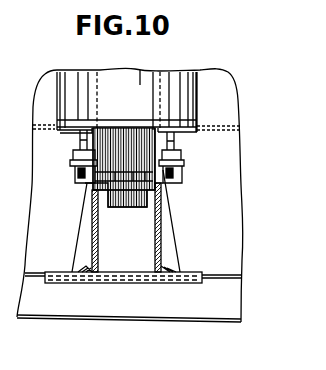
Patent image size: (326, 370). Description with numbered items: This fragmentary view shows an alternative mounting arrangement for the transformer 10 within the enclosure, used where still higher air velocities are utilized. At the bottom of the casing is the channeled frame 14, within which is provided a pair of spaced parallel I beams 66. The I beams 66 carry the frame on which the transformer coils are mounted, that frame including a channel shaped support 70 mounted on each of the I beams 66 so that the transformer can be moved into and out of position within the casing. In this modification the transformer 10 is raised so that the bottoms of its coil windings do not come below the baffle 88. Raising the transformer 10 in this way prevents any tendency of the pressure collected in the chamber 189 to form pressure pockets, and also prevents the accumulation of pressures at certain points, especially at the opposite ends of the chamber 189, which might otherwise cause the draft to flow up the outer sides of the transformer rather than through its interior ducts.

The transformer 10 is at (198, 91).
The baffle 88 is at (217, 126).
The chamber 189 is at (50, 178).
The channel shaped support 70 is at (108, 285).
The I beams 66 is at (118, 310).
The channeled frame 14 is at (129, 329).